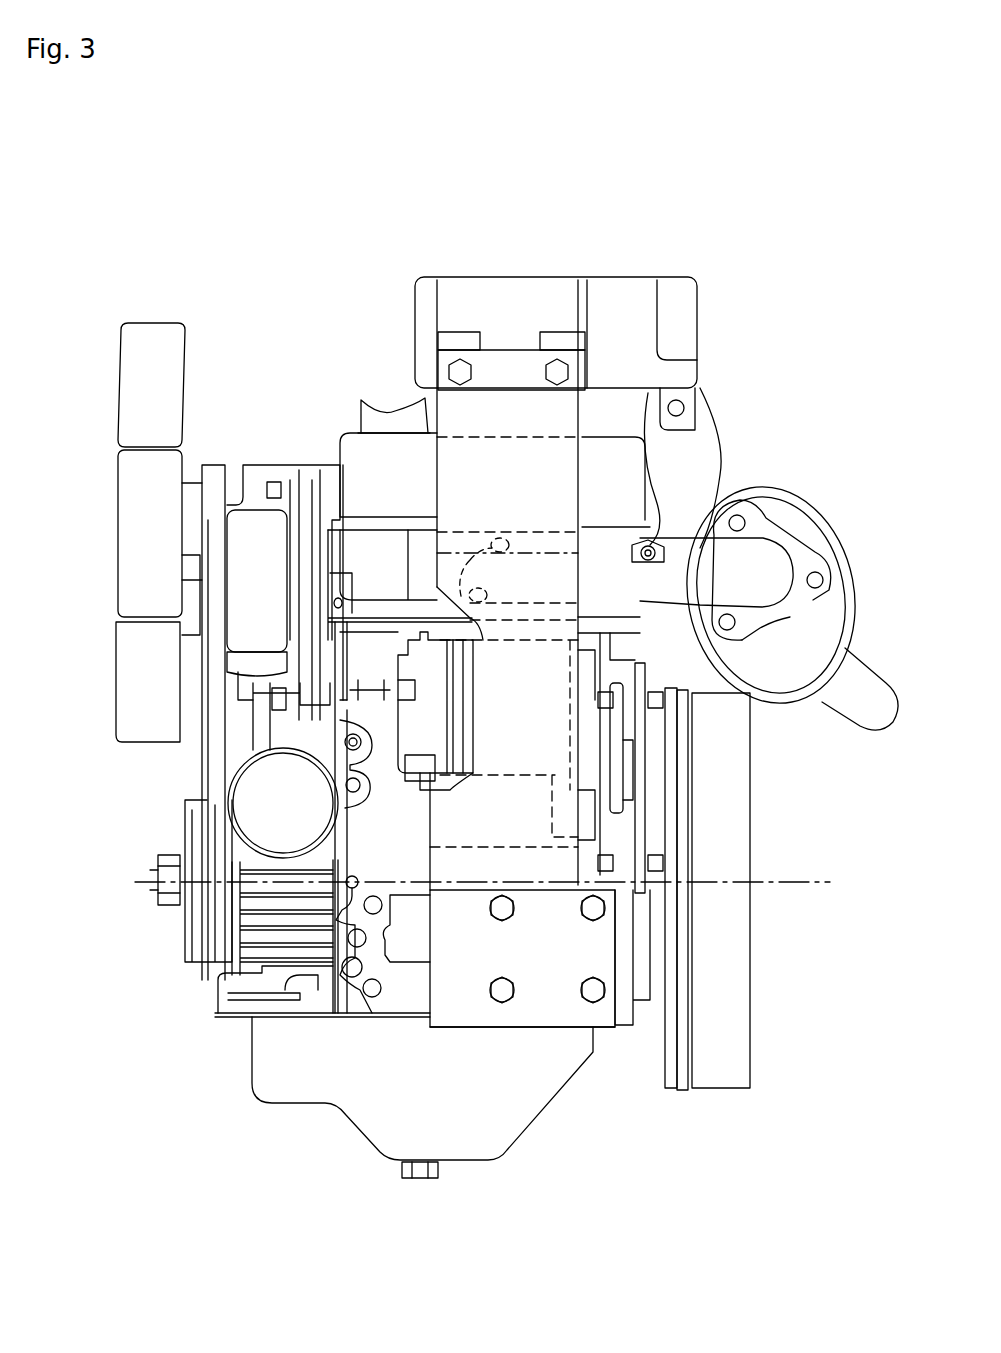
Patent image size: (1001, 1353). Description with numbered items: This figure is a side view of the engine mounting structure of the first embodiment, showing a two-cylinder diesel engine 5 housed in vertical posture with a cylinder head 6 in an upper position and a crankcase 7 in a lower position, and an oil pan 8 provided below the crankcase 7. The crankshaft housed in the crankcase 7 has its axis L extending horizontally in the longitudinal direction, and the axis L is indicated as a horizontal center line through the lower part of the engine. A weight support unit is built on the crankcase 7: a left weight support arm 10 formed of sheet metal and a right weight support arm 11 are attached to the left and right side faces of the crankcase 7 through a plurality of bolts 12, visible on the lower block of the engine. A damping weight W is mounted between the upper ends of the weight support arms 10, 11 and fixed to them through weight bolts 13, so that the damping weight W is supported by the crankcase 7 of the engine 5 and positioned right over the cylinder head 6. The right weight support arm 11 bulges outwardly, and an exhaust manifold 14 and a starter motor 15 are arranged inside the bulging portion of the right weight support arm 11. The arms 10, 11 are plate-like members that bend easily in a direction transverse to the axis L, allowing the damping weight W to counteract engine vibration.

The engine 5 is at (259, 447).
The cylinder head 6 is at (377, 572).
The crankcase 7 is at (375, 760).
The oil pan 8 is at (520, 1130).
The left weight support arm 10 is at (707, 452).
The right weight support arm 11 is at (572, 423).
The bolts 12 is at (588, 998).
The weight bolts 13 is at (557, 372).
The exhaust manifold 14 is at (648, 553).
The starter motor 15 is at (427, 745).
The damping weight W is at (681, 297).
The axis of the crankshaft L is at (816, 892).